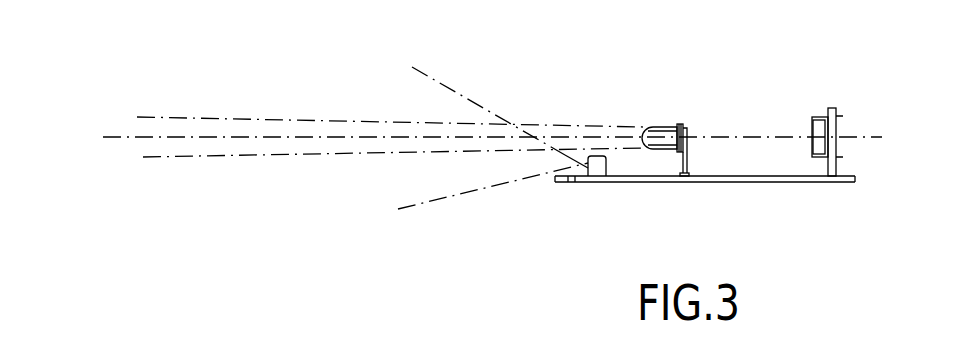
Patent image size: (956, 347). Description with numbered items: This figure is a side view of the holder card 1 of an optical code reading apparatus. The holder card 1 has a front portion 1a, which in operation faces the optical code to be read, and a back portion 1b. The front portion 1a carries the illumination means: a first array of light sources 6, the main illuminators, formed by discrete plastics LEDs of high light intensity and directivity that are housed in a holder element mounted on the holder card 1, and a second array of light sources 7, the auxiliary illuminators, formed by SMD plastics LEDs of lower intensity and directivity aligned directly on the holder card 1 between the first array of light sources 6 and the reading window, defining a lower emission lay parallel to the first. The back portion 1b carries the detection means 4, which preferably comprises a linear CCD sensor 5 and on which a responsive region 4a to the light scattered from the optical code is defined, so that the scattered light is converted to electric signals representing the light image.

The holder card 1 is at (777, 183).
The front portion 1a is at (630, 183).
The back portion 1b is at (835, 183).
The detection means 4 is at (837, 106).
The responsive region 4a is at (812, 128).
The CCD sensor 5 is at (818, 117).
The first array of light sources 6 is at (665, 125).
The second array of light sources 7 is at (597, 168).